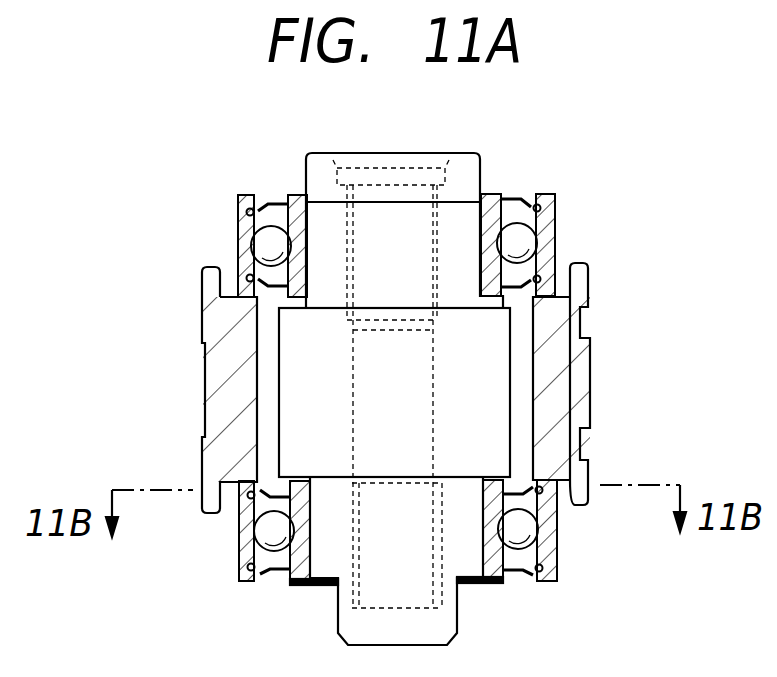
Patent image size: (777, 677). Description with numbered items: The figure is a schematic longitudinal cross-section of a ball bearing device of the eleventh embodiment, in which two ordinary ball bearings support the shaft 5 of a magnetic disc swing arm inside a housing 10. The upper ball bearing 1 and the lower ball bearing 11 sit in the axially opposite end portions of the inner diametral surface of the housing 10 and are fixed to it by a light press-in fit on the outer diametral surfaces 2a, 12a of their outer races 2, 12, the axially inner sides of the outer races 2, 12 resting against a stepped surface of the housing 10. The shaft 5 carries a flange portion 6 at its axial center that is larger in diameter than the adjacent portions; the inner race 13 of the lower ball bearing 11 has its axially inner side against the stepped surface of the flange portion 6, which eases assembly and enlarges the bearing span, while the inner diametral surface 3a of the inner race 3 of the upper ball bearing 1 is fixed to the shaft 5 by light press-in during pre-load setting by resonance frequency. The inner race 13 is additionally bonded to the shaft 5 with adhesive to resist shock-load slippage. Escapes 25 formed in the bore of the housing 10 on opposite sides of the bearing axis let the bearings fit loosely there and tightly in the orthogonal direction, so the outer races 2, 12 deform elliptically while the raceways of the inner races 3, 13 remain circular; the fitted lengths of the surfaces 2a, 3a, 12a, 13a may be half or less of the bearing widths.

The upper ball bearing 1 is at (434, 198).
The outer race 2 is at (439, 230).
The outer diametral surface 2a is at (553, 238).
The inner race 3 is at (420, 198).
The inner diametral surface 3a is at (481, 217).
The shaft 5 is at (468, 164).
The flange portion 6 is at (490, 392).
The housing 10 is at (567, 350).
The lower ball bearing 11 is at (445, 574).
The outer race 12 is at (445, 530).
The outer diametral surface 12a is at (557, 530).
The inner race 13 is at (425, 566).
The inner diametral surface 13a is at (484, 537).
The escape 25 is at (221, 283).